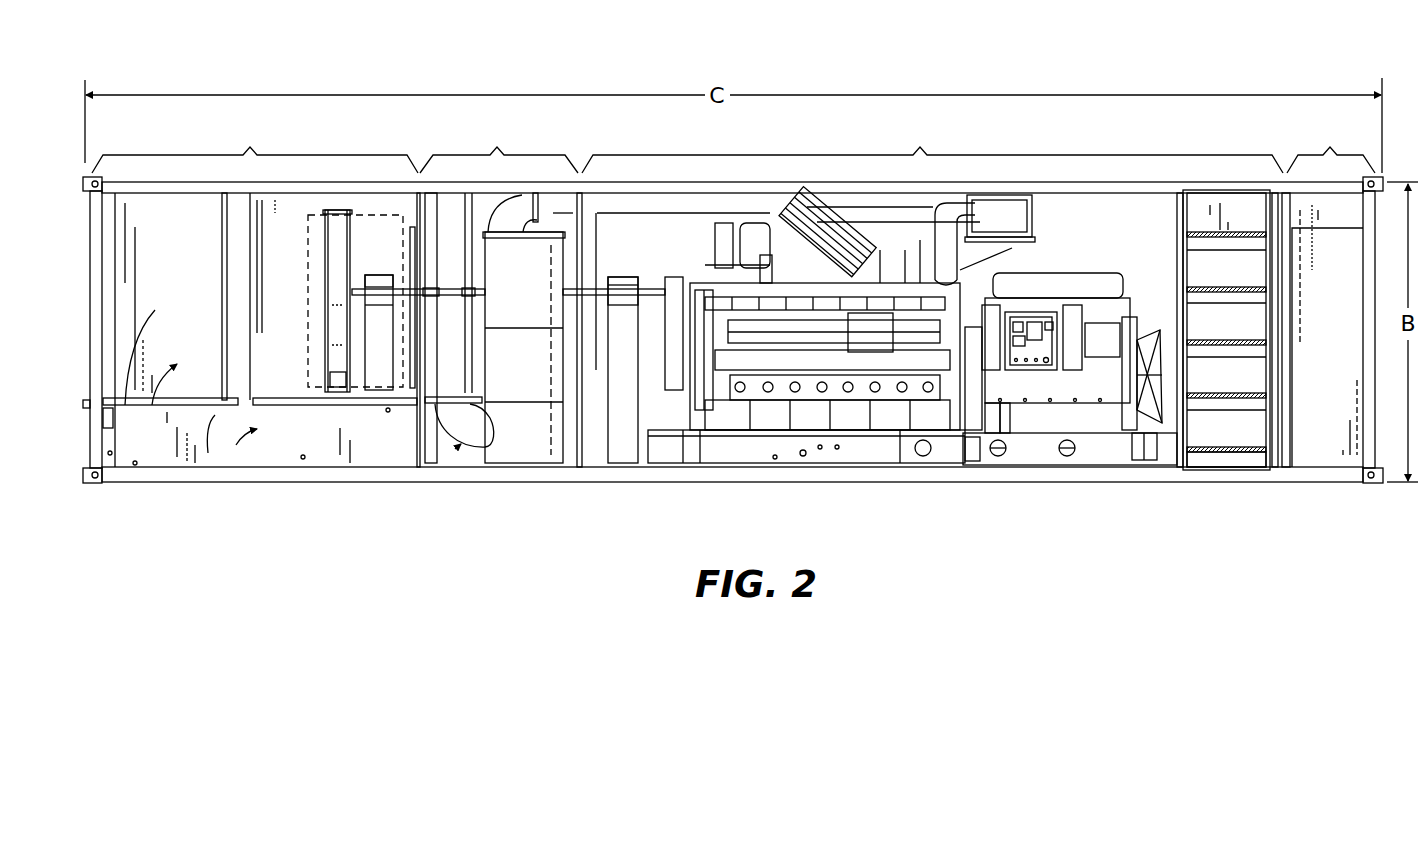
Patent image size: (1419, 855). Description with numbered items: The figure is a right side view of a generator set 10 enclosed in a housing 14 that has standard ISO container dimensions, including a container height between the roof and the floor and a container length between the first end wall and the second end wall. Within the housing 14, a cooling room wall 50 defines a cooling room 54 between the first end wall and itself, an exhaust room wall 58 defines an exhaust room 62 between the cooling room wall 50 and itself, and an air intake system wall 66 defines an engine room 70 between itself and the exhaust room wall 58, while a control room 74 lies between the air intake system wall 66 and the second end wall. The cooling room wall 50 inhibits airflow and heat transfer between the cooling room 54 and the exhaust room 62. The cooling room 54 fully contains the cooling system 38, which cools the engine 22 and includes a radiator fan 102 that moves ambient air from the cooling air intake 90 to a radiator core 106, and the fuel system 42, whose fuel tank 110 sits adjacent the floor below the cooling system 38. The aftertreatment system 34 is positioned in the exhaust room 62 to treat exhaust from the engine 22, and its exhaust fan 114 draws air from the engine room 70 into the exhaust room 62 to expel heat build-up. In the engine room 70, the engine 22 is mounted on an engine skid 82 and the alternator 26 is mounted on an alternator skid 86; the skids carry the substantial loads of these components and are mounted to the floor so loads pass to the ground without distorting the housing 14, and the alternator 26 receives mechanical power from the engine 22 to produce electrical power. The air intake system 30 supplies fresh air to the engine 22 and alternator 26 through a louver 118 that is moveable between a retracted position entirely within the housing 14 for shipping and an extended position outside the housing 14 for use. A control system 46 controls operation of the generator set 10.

The generator set 10 is at (346, 70).
The housing 14 is at (600, 471).
The engine 22 is at (797, 433).
The alternator 26 is at (1035, 383).
The air intake system 30 is at (1207, 455).
The aftertreatment system 34 is at (455, 449).
The cooling system 38 is at (152, 405).
The fuel system 42 is at (236, 445).
The control system 46 is at (1333, 407).
The cooling room wall 50 is at (417, 433).
The cooling room 54 is at (255, 147).
The exhaust room wall 58 is at (580, 442).
The exhaust room 62 is at (499, 147).
The air intake system wall 66 is at (1283, 418).
The engine room 70 is at (932, 147).
The control room 74 is at (1331, 146).
The engine skid 82 is at (728, 452).
The alternator skid 86 is at (1092, 447).
The cooling air intake 90 is at (303, 367).
The radiator fan 102 is at (337, 378).
The radiator core 106 is at (127, 405).
The fuel tank 110 is at (203, 428).
The exhaust fan 114 is at (580, 358).
The louver 118 is at (1233, 370).